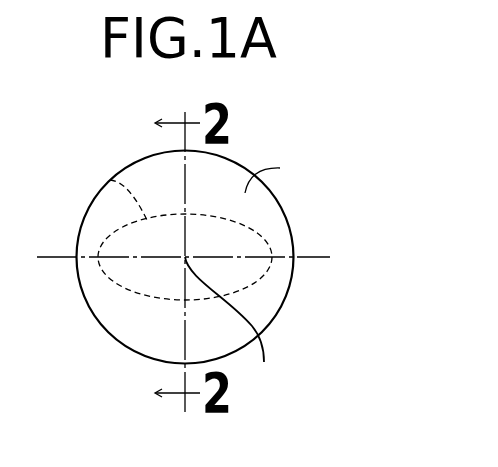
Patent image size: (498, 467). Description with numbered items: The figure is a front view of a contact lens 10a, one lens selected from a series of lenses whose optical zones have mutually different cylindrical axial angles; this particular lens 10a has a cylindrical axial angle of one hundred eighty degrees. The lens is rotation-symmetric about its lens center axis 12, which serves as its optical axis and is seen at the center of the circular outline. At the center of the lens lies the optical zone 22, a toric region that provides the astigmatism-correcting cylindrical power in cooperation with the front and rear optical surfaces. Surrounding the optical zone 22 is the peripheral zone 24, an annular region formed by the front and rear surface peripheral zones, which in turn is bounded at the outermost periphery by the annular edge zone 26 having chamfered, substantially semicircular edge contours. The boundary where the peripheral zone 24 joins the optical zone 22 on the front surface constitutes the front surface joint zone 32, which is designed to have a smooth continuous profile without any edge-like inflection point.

The contact lens 10a is at (335, 118).
The lens center axis 12 is at (233, 323).
The optical zone 22 is at (228, 231).
The peripheral zone 24 is at (275, 175).
The edge zone 26 is at (233, 160).
The front surface joint zone 32 is at (110, 180).